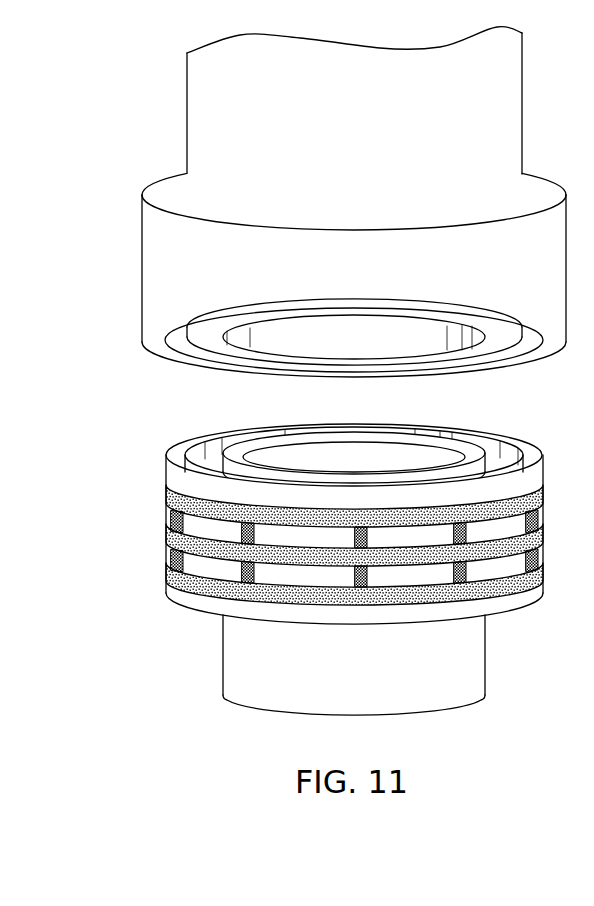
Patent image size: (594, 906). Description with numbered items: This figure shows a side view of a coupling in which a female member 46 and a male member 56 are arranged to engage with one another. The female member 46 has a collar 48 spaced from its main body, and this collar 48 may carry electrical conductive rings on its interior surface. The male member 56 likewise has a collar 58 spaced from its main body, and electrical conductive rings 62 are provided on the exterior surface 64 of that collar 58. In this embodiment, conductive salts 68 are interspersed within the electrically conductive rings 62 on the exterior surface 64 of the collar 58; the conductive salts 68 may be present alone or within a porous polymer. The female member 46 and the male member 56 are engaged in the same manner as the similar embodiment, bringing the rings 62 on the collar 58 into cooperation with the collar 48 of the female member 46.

The female member 46 is at (187, 101).
The collar 48 is at (142, 240).
The collar 58 is at (310, 515).
The conductive salts 68 is at (172, 509).
The exterior surface 64 is at (192, 556).
The electrical conductive rings 62 is at (170, 564).
The male member 56 is at (223, 665).